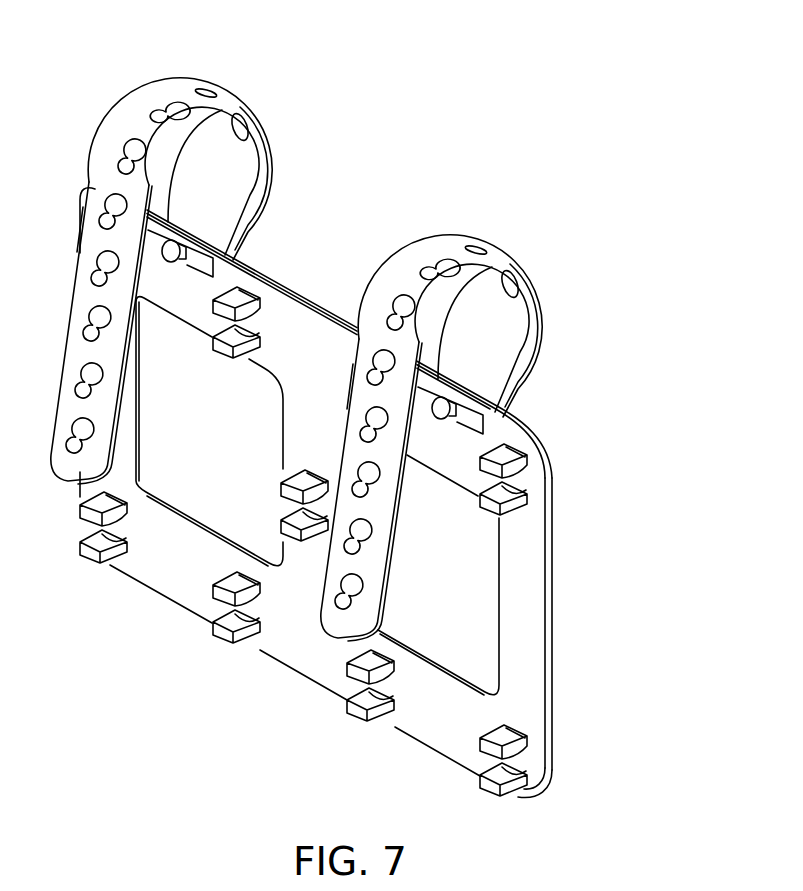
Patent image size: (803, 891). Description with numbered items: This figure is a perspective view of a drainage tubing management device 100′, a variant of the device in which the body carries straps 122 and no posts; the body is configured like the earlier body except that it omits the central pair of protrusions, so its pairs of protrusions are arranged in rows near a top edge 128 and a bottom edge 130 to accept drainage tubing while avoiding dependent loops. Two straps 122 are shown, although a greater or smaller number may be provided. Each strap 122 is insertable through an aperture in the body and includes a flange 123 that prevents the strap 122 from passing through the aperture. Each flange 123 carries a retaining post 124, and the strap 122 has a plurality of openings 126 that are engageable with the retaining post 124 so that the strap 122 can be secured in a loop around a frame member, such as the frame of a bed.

The drainage tubing management device 100′ is at (612, 662).
The strap 122 is at (176, 77).
The flange 123 is at (230, 252).
The retaining post 124 is at (197, 240).
The openings 126 is at (121, 164).
The top edge 128 is at (280, 280).
The bottom edge 130 is at (316, 493).